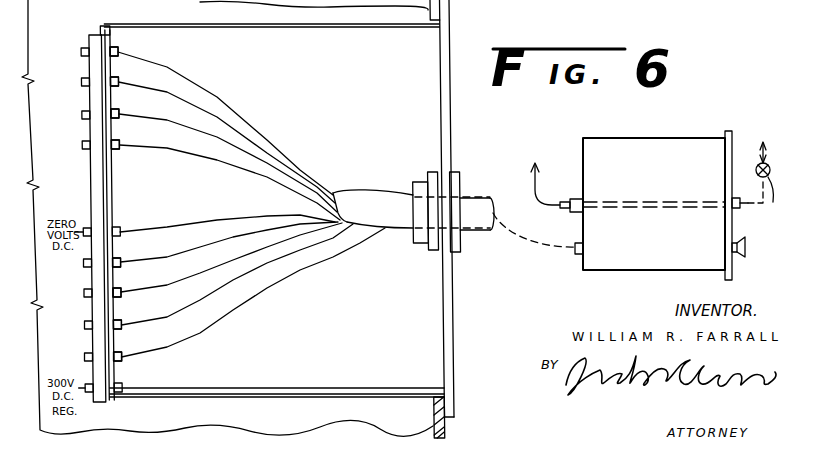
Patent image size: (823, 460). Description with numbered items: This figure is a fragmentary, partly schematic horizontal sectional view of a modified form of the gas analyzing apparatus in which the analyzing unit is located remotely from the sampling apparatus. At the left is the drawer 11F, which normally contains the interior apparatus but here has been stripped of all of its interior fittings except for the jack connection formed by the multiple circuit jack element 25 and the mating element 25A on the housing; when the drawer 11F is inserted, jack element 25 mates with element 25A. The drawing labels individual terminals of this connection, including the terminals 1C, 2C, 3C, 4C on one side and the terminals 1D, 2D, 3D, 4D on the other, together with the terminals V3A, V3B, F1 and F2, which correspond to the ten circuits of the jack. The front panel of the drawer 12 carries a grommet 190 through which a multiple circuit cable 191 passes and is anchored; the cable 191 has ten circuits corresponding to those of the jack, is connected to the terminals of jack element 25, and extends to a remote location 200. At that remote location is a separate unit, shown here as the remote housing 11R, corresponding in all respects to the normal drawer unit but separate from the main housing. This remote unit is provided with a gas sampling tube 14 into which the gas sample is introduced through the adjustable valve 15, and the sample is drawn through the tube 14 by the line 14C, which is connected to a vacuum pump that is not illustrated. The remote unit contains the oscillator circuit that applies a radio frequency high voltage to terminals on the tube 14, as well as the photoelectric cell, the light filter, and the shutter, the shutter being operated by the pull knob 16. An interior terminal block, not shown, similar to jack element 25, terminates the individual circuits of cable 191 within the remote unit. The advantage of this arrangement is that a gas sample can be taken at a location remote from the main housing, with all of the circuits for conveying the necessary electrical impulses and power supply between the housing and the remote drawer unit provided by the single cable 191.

The front panel of the drawer 12 is at (449, 340).
The drawer 11F is at (218, 33).
The rear housing 11R is at (640, 145).
The multiple circuit jack element 25 is at (107, 32).
The jack element on the housing 25A is at (93, 35).
The terminal 1C is at (80, 52).
The terminal 2C is at (80, 82).
The terminal 3C is at (80, 115).
The terminal 4C is at (80, 145).
The terminal 1D is at (115, 50).
The terminal 2D is at (115, 80).
The terminal 3D is at (116, 112).
The terminal 4D is at (117, 143).
The terminal V3A is at (84, 263).
The terminal V3B is at (84, 293).
The filament terminal F1 is at (84, 325).
The filament terminal F2 is at (84, 357).
The multiple circuit cable 191 is at (395, 222).
The grommet 190 is at (460, 247).
The gas sampling tube 14 is at (656, 200).
The line to vacuum pump 14C is at (537, 188).
The adjustable valve 15 is at (770, 176).
The pull knob 16 is at (744, 258).
The remote location 200 is at (582, 262).